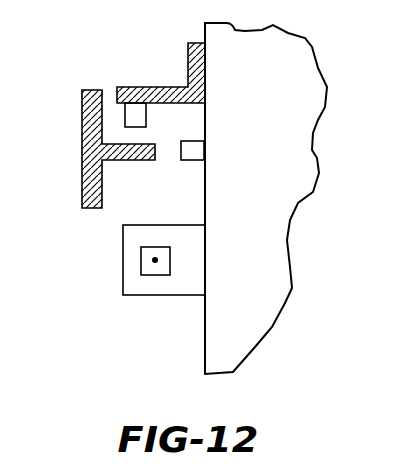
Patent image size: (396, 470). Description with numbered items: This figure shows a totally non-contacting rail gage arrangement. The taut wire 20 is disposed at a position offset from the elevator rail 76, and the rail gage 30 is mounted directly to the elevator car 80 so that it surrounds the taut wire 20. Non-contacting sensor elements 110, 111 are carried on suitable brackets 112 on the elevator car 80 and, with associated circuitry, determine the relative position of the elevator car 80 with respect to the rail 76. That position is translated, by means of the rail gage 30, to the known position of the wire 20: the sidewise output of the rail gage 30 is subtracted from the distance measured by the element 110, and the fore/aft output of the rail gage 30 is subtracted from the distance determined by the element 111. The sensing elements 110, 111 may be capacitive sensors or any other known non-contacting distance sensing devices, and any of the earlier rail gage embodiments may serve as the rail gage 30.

The elevator car 80 is at (263, 262).
The elevator rail 76 is at (90, 90).
The brackets 112 is at (145, 86).
The sensing element 111 is at (140, 121).
The sensing element 110 is at (193, 158).
The rail gage 30 is at (156, 309).
The taut wire 20 is at (155, 260).